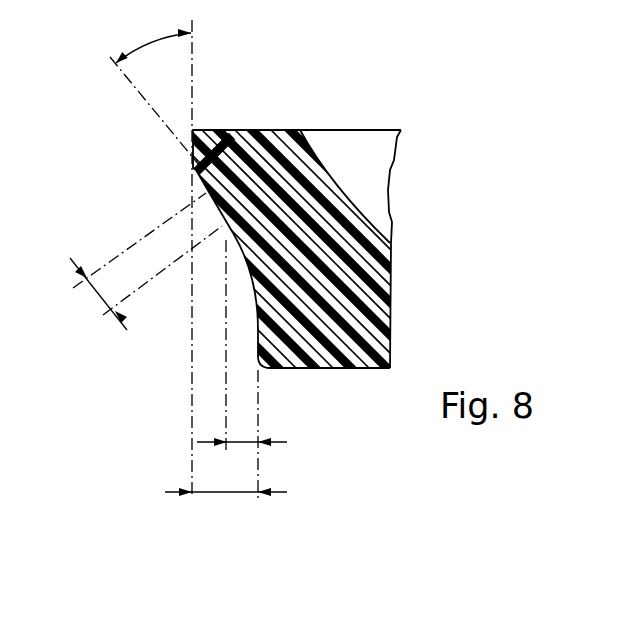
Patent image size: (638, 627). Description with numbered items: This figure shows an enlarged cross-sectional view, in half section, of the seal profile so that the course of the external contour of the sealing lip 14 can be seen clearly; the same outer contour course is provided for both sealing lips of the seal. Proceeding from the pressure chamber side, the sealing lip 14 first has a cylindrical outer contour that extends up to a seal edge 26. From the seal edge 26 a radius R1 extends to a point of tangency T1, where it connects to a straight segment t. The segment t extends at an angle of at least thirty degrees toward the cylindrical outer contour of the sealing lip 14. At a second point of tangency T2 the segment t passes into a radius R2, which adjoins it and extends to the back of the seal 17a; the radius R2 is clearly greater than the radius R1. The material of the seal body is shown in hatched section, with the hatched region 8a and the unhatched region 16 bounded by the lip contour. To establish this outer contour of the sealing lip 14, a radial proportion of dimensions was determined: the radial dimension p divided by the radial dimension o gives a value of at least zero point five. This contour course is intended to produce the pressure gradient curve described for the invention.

The cutting insert / tool body section 8a is at (264, 122).
The sealing lip 14 is at (223, 142).
The body region 16 is at (373, 148).
The radius R1 is at (214, 165).
The back of the seal 17a is at (357, 362).
The seal edge 26 is at (195, 165).
The radius R2 is at (247, 335).
The point of tangency T1 is at (198, 187).
The point of tangency T2 is at (220, 232).
The segment t is at (100, 298).
The radial dimension p is at (242, 346).
The radial dimension o is at (226, 436).